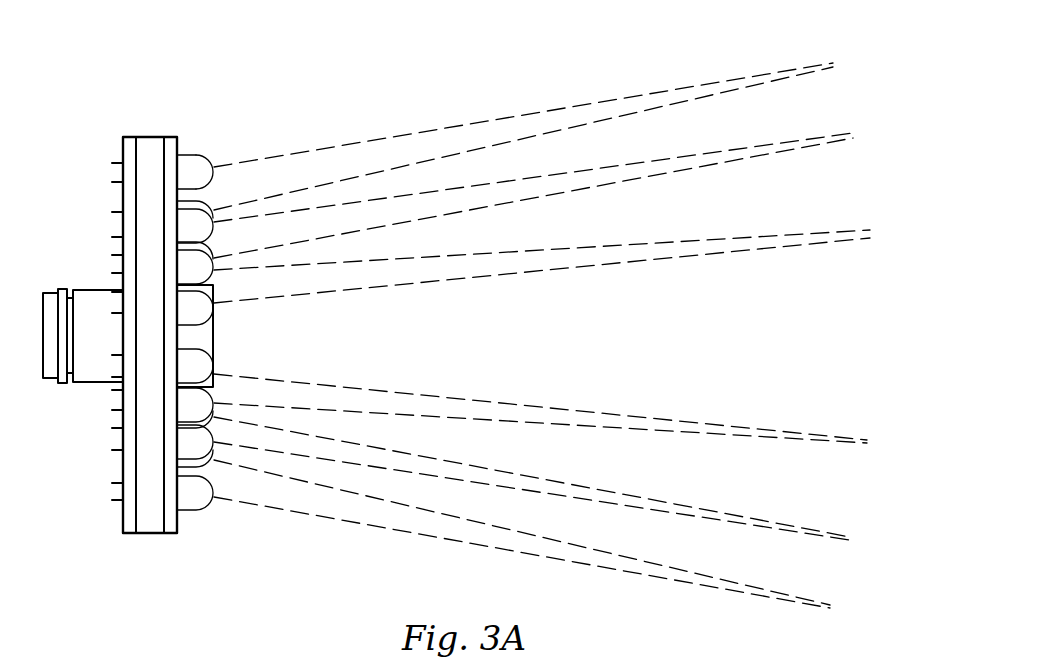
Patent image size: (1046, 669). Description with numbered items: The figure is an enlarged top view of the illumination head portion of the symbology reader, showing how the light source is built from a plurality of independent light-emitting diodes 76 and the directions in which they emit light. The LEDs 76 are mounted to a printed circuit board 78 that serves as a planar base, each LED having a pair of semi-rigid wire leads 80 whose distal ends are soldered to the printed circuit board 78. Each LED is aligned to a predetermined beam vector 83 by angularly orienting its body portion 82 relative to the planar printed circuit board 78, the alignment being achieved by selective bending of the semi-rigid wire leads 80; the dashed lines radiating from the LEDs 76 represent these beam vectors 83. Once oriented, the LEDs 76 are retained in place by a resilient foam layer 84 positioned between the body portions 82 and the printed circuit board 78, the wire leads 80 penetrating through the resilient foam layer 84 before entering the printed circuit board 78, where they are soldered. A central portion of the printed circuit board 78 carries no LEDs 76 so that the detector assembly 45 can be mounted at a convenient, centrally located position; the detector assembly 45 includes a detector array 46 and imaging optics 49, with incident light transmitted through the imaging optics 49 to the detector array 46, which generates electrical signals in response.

The detector assembly 45 is at (83, 383).
The detector array 46 is at (50, 290).
The imaging optics 49 is at (214, 325).
The light-emitting diodes 76 is at (193, 154).
The printed circuit board 78 is at (130, 137).
The semi-rigid wire leads 80 is at (117, 163).
The body portion 82 is at (213, 167).
The beam vector 83 is at (622, 102).
The resilient foam layer 84 is at (153, 533).